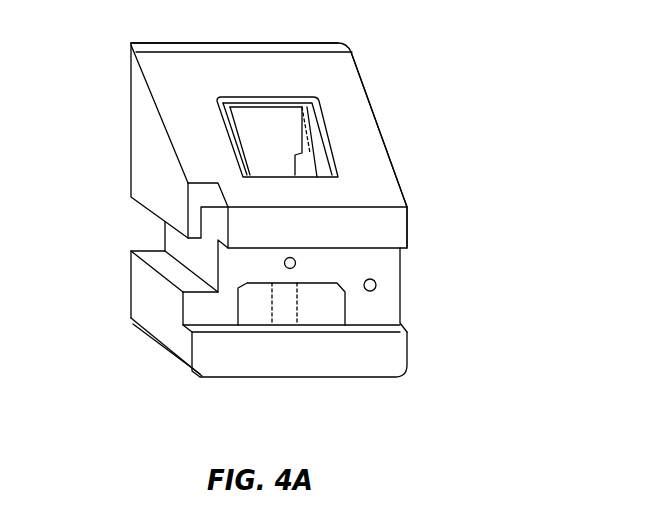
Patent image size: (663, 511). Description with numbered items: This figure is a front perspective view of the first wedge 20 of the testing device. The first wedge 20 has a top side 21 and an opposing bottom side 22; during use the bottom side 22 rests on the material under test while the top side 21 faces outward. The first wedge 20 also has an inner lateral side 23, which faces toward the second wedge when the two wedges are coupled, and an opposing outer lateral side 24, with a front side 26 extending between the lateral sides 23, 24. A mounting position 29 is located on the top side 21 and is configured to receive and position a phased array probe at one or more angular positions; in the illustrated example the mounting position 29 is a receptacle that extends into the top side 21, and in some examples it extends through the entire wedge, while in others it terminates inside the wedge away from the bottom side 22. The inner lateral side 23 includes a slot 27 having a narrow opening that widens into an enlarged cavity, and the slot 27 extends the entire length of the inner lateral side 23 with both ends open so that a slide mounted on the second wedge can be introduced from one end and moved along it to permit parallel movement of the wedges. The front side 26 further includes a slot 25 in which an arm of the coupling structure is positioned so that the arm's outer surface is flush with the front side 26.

The first wedge 20 is at (474, 66).
The top side 21 is at (345, 83).
The bottom side 22 is at (367, 378).
The inner lateral side 23 is at (145, 148).
The outer lateral side 24 is at (392, 155).
The slot 25 is at (378, 302).
The front side 26 is at (217, 362).
The slot 27 is at (150, 227).
The mounting position 29 is at (265, 133).